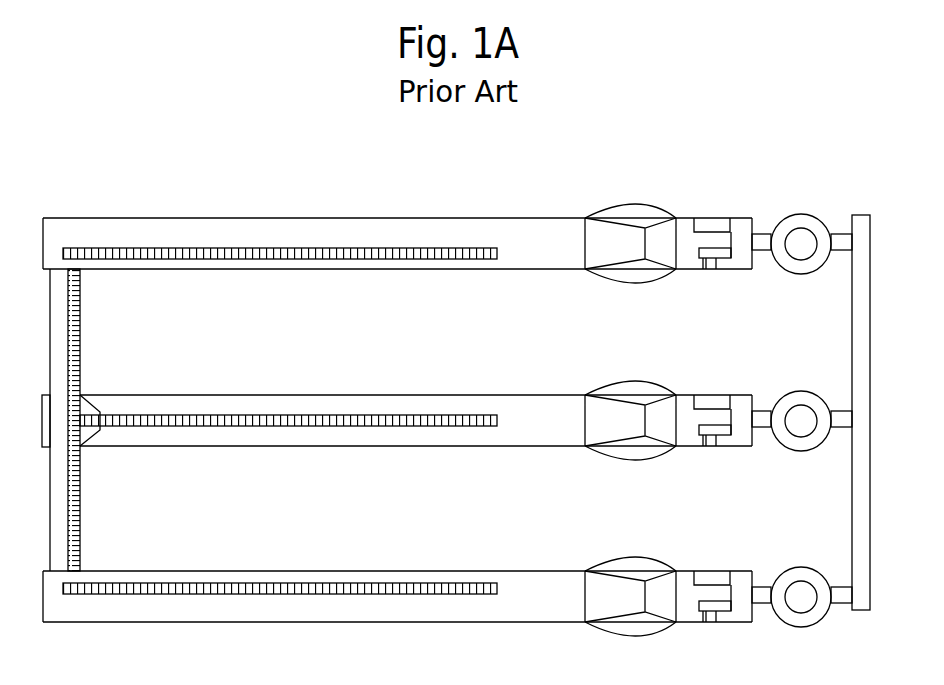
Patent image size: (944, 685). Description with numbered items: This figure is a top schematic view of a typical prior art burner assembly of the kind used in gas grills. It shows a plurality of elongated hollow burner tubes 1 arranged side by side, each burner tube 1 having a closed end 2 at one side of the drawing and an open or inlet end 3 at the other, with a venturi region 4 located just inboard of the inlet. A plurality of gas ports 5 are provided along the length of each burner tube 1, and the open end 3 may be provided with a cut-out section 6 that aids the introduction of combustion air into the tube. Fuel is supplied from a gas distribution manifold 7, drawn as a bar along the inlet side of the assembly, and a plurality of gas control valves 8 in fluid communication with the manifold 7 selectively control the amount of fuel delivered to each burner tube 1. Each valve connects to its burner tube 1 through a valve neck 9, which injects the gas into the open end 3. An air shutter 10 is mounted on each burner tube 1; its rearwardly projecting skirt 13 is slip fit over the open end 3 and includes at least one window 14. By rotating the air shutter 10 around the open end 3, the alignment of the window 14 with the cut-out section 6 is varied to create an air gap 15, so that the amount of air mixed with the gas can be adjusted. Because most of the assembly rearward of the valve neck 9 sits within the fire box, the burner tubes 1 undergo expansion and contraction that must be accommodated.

The burner tube 1 is at (213, 215).
The closed end 2 is at (57, 215).
The open end 3 is at (720, 230).
The venturi region 4 is at (638, 240).
The gas ports 5 is at (312, 259).
The cut-out section 6 is at (708, 232).
The gas distribution manifold 7 is at (871, 240).
The gas control valve 8 is at (792, 215).
The valve neck 9 is at (780, 273).
The air shutter 10 is at (716, 270).
The skirt 13 is at (703, 269).
The window 14 is at (733, 273).
The air gap 15 is at (722, 263).